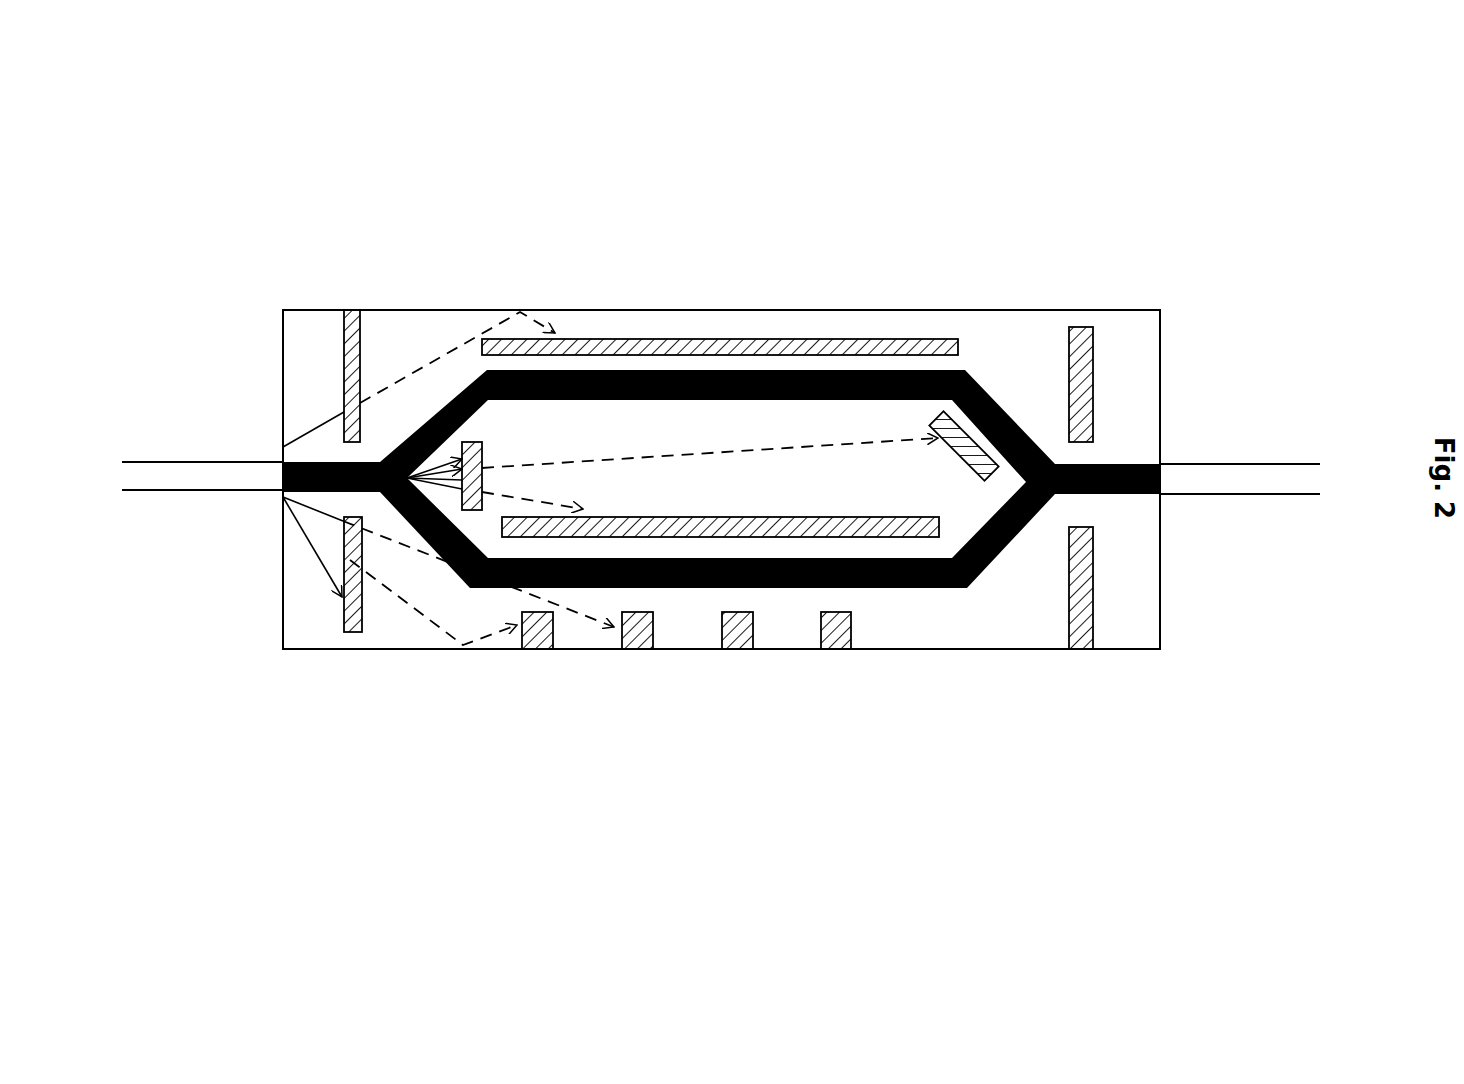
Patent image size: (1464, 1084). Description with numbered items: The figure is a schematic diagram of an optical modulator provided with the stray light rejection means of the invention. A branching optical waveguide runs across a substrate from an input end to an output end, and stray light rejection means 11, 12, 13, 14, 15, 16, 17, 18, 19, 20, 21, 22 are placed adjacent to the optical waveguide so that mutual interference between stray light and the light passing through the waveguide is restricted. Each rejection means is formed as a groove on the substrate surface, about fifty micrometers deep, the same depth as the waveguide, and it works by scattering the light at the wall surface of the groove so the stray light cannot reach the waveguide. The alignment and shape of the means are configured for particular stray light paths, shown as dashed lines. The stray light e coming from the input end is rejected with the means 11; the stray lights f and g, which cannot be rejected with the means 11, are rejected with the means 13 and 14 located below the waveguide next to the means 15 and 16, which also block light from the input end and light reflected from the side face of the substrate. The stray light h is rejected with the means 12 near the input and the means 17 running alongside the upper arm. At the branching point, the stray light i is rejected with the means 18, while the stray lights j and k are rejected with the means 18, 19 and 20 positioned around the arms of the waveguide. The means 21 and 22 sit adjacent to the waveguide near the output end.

The stray light rejection means 11 is at (348, 630).
The stray light rejection means 12 is at (347, 310).
The stray light rejection means 13 is at (538, 650).
The stray light rejection means 14 is at (642, 650).
The stray light rejection means 15 is at (738, 650).
The stray light rejection means 16 is at (833, 650).
The stray light rejection means 17 is at (803, 338).
The stray light rejection means 18 is at (463, 510).
The stray light rejection means 19 is at (983, 387).
The stray light rejection means 20 is at (873, 537).
The stray light rejection means 21 is at (1097, 333).
The stray light rejection means 22 is at (1093, 605).
The stray light e is at (313, 550).
The stray light f is at (404, 603).
The stray light g is at (402, 547).
The stray light h is at (418, 362).
The stray light i is at (444, 458).
The stray light j is at (679, 456).
The stray light k is at (505, 497).